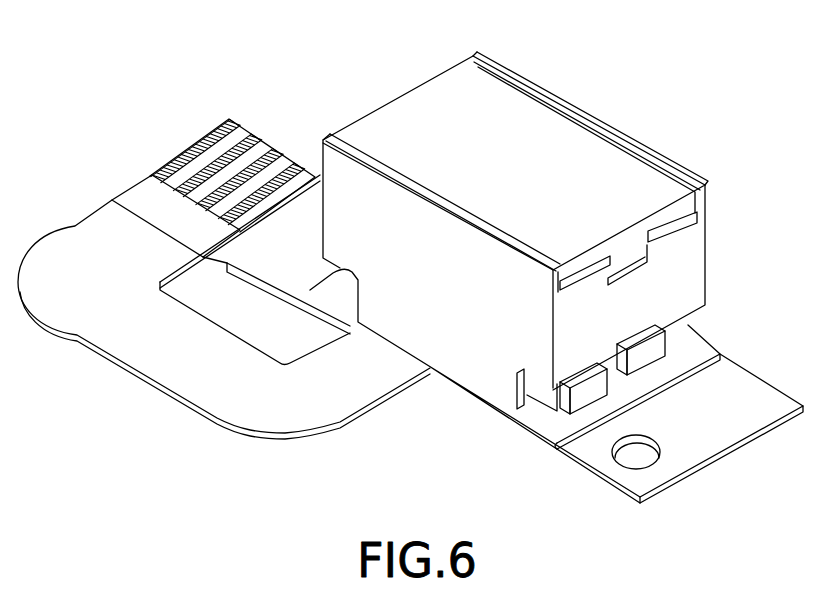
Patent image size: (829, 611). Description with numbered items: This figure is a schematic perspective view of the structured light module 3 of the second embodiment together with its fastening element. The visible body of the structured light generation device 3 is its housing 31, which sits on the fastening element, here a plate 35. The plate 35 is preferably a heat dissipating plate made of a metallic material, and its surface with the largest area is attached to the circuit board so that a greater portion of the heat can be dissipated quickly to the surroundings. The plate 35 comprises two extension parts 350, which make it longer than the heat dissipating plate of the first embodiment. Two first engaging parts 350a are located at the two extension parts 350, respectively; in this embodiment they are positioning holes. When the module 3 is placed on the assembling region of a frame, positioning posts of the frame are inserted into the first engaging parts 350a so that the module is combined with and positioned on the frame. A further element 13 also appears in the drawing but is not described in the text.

The structured light generation device 3 is at (696, 73).
The bus bar plate 13 is at (167, 370).
The housing 31 is at (693, 267).
The plate 35 is at (577, 467).
The extension parts 350 is at (280, 267).
The first engaging parts 350a is at (636, 448).